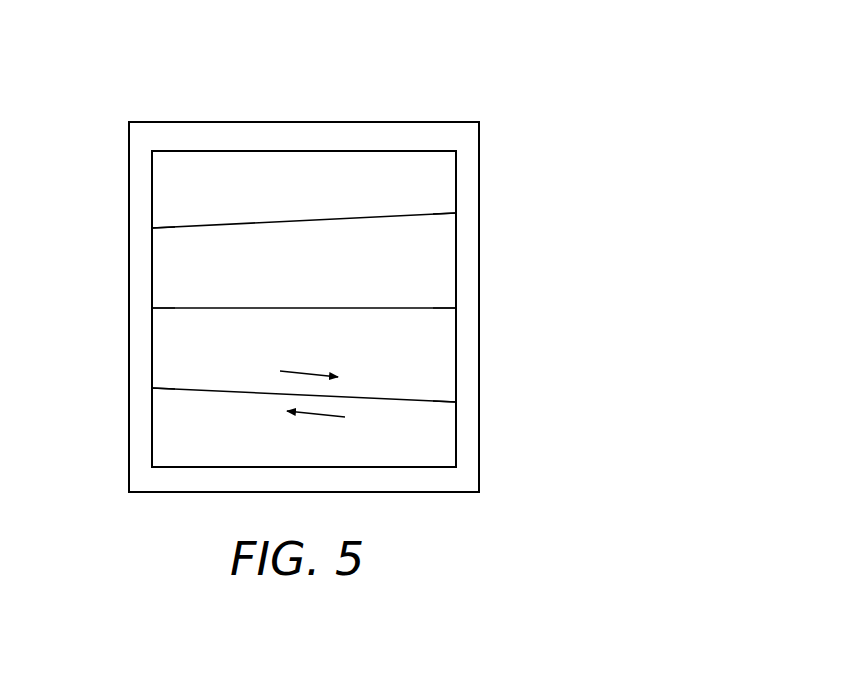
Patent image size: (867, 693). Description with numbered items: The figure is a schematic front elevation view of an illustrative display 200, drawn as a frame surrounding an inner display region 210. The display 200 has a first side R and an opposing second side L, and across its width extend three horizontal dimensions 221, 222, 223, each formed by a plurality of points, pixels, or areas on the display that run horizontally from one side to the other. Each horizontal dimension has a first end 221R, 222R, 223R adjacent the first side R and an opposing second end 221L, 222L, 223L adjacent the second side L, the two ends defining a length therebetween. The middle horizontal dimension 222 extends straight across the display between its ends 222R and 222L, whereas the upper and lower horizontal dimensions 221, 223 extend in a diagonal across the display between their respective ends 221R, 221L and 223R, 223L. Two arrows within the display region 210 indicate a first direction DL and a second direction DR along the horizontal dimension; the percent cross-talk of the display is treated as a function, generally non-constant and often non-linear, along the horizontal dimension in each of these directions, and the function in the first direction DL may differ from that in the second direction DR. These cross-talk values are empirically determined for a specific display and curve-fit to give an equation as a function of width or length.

The display 200 is at (464, 68).
The display panel 210 is at (326, 281).
The second side L is at (149, 160).
The first side R is at (459, 160).
The horizontal dimension 221 is at (436, 213).
The second end 221L is at (160, 229).
The first end 221R is at (445, 214).
The horizontal dimension 222 is at (433, 308).
The second end 222L is at (160, 309).
The first end 222R is at (443, 309).
The horizontal dimension 223 is at (432, 402).
The second end 223L is at (160, 389).
The first end 223R is at (443, 403).
The second direction DR is at (300, 371).
The first direction DL is at (318, 416).